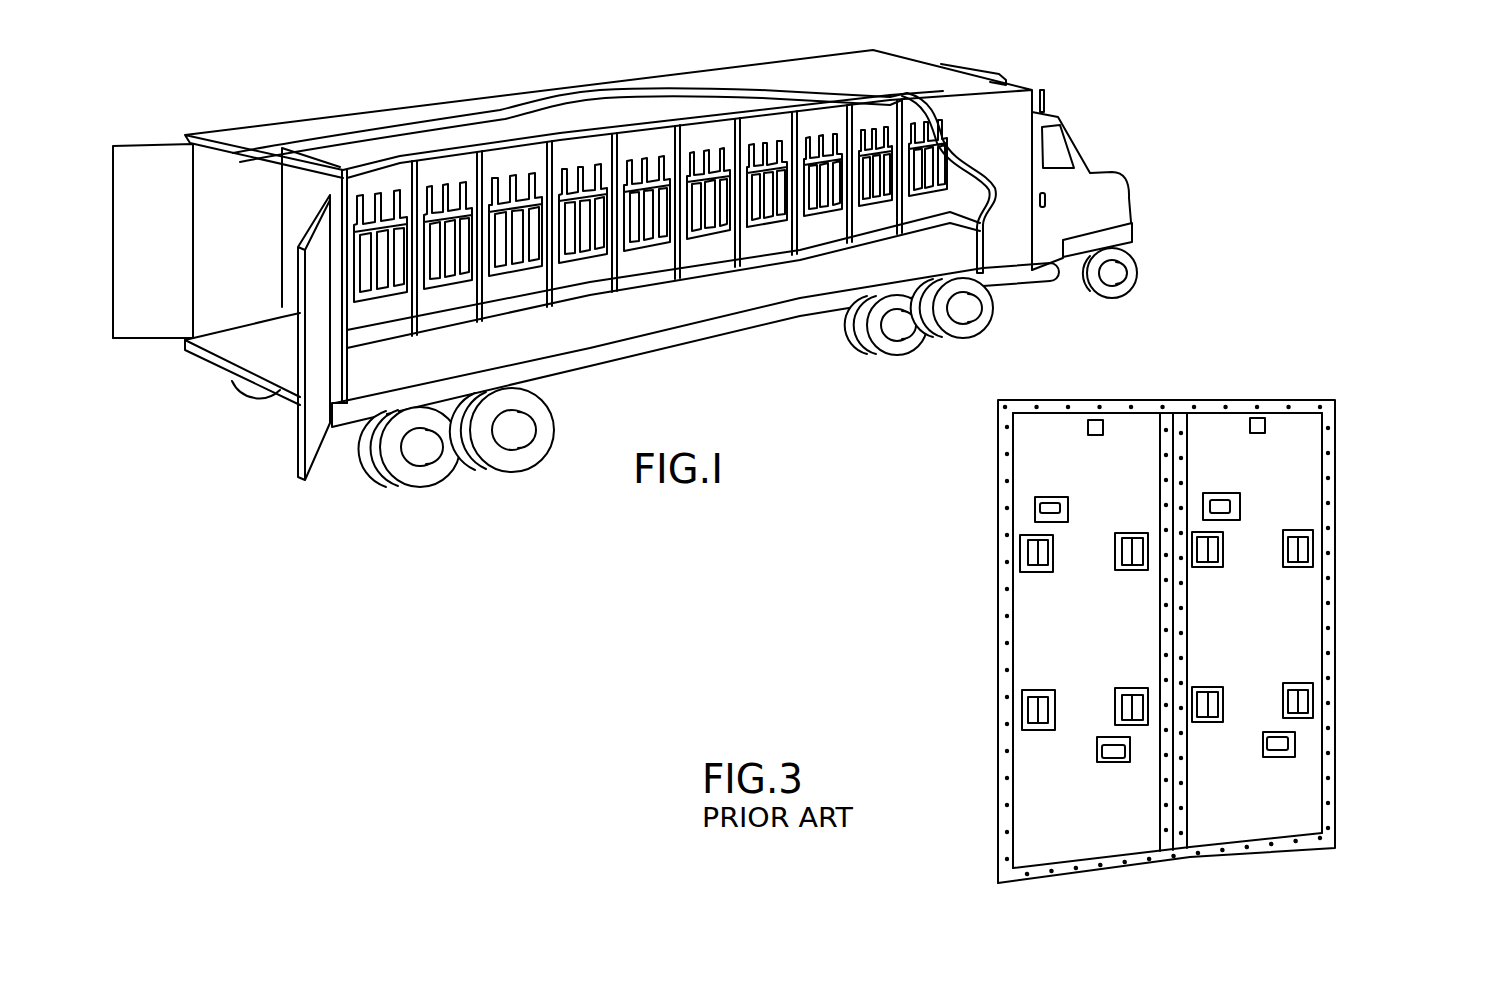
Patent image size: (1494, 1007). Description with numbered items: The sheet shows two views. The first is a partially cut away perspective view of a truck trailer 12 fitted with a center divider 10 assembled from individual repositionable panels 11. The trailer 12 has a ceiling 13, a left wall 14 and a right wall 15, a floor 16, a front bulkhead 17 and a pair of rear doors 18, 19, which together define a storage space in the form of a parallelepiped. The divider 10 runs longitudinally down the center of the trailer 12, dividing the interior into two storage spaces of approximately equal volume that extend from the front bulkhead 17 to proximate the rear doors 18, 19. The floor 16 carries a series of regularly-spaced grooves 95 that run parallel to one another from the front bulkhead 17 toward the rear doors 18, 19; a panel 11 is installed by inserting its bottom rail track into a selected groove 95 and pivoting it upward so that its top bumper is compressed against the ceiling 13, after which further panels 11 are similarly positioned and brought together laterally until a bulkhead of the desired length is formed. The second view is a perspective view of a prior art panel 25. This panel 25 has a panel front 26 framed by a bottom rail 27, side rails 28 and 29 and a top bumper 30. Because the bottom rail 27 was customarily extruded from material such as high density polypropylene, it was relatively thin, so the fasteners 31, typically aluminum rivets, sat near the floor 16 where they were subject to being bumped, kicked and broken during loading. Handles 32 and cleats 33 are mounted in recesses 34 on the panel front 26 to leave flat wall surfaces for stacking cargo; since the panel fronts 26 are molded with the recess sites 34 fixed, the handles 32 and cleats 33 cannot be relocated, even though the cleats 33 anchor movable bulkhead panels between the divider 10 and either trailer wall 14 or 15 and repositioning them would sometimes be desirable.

In FIG. 1, the center divider 10 is at (638, 297).
In FIG. 1, the panel 11 is at (382, 180).
In FIG. 1, the truck trailer 12 is at (605, 82).
In FIG. 1, the ceiling 13 is at (780, 92).
In FIG. 1, the left wall 14 is at (217, 185).
In FIG. 1, the right wall 15 is at (1012, 250).
In FIG. 1, the floor 16 is at (255, 344).
In FIG. 1, the front bulkhead 17 is at (973, 181).
In FIG. 1, the rear door 18 is at (148, 342).
In FIG. 1, the rear door 19 is at (313, 440).
In FIG. 1, the grooves 95 is at (285, 393).
In FIG. 3, the panel 25 is at (992, 718).
In FIG. 3, the panel front 26 is at (1093, 824).
In FIG. 3, the bottom rail 27 is at (1053, 875).
In FIG. 3, the side rail 28 is at (995, 805).
In FIG. 3, the side rail 29 is at (1170, 838).
In FIG. 3, the top bumper 30 is at (1077, 400).
In FIG. 3, the fasteners 31 is at (1093, 867).
In FIG. 3, the handles 32 is at (1033, 508).
In FIG. 3, the cleats 33 is at (1020, 551).
In FIG. 3, the recesses 34 is at (1225, 543).